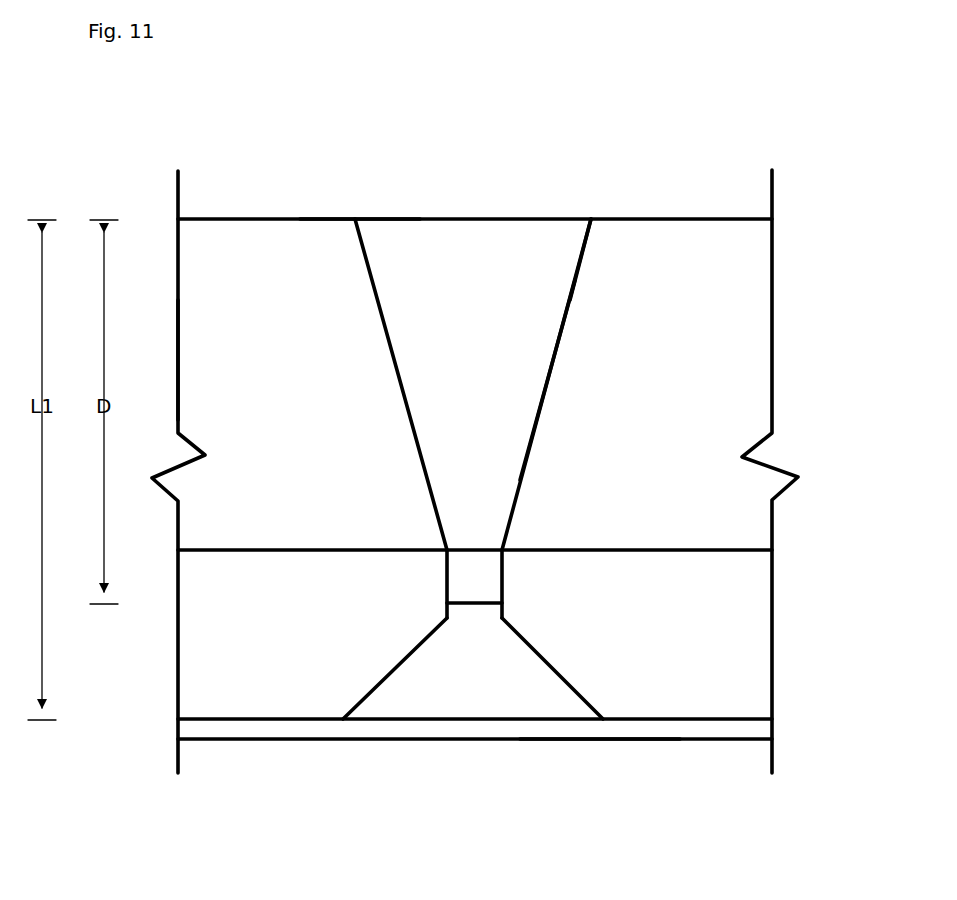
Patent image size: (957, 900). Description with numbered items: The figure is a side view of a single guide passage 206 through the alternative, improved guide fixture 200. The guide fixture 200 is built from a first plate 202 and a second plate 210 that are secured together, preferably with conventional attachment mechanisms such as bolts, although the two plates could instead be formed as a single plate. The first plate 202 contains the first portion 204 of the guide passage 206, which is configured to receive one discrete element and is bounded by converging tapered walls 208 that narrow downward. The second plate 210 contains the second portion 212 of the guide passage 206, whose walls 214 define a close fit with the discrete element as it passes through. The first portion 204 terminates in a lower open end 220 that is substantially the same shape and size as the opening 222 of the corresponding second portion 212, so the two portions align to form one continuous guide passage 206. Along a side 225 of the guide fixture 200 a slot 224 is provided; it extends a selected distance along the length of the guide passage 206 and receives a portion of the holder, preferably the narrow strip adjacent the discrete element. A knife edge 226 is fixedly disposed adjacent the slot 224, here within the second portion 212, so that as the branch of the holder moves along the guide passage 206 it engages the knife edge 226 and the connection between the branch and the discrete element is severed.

The guide fixture 200 is at (122, 741).
The first plate 202 is at (702, 230).
The first portion 204 is at (315, 212).
The guide passage 206 is at (473, 250).
The converging tapered walls 208 is at (573, 240).
The second plate 210 is at (697, 740).
The second portion 212 is at (597, 772).
The walls 214 is at (461, 581).
The lower open end 220 is at (490, 548).
The opening 222 is at (447, 555).
The slot 224 is at (558, 347).
The side 225 is at (316, 377).
The knife edge 226 is at (481, 605).